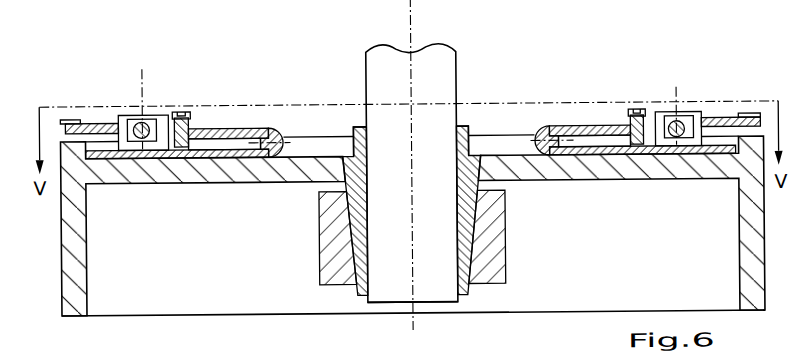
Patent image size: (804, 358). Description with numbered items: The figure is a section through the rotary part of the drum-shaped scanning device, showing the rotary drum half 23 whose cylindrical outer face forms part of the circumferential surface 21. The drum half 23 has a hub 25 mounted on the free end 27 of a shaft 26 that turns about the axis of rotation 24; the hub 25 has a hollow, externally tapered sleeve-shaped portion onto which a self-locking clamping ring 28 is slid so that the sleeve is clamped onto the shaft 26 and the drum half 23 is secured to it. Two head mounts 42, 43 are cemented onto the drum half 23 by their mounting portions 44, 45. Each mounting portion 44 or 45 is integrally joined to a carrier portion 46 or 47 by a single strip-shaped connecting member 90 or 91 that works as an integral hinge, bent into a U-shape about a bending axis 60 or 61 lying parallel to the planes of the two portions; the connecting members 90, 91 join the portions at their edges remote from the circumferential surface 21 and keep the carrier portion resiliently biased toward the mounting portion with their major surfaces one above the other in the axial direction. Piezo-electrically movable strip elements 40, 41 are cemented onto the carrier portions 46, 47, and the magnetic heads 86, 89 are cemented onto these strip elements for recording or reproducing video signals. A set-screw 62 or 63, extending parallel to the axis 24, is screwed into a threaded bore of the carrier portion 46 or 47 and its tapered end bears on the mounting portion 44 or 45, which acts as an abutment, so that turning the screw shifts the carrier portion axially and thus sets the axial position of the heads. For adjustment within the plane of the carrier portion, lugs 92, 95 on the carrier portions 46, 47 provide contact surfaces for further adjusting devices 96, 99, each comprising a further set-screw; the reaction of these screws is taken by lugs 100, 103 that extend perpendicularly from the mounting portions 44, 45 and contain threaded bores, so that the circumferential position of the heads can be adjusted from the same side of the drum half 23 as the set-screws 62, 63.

The circumferential surface 21 is at (62, 258).
The rotary drum half 23 is at (535, 290).
The axis of rotation 24 is at (416, 305).
The hub 25 is at (355, 172).
The shaft 26 is at (383, 65).
The free end of the shaft 27 is at (387, 302).
The self-locking clamping ring 28 is at (335, 278).
The piezo-electrically movable strip element 40 is at (93, 124).
The piezo-electrically movable strip element 41 is at (724, 122).
The head mount 42 is at (199, 128).
The head mount 43 is at (612, 125).
The mounting portion 44 is at (205, 160).
The mounting portion 45 is at (622, 160).
The carrier portion 46 is at (211, 130).
The carrier portion 47 is at (608, 130).
The bending axis 60 is at (290, 160).
The bending axis 61 is at (556, 160).
The set-screw 62 is at (186, 114).
The set-screw 63 is at (637, 115).
The magnetic head 86 is at (68, 120).
The magnetic head 89 is at (754, 118).
The strip-shaped connecting member 90 is at (277, 139).
The strip-shaped connecting member 91 is at (542, 139).
The lug 92 is at (134, 121).
The lug 95 is at (688, 124).
The further adjusting device 96 is at (140, 99).
The further adjusting device 99 is at (673, 106).
The lug 100 is at (160, 117).
The lug 103 is at (664, 118).